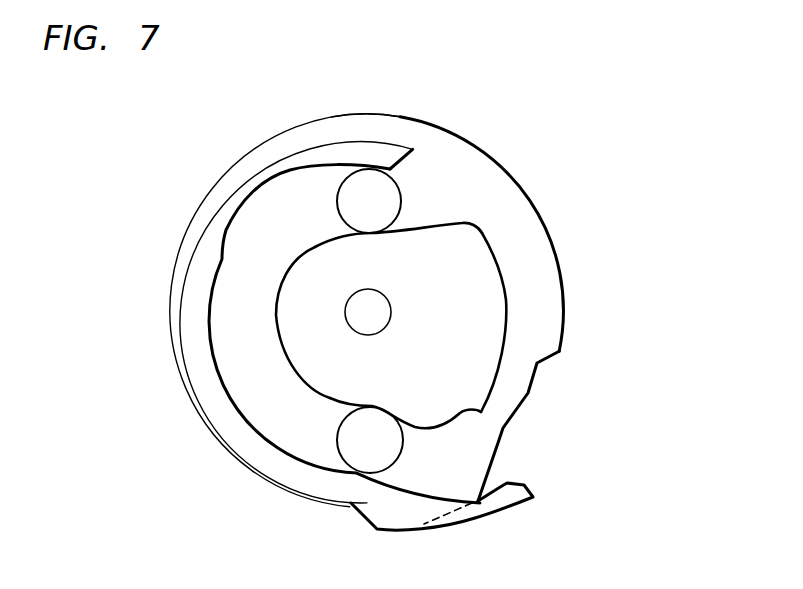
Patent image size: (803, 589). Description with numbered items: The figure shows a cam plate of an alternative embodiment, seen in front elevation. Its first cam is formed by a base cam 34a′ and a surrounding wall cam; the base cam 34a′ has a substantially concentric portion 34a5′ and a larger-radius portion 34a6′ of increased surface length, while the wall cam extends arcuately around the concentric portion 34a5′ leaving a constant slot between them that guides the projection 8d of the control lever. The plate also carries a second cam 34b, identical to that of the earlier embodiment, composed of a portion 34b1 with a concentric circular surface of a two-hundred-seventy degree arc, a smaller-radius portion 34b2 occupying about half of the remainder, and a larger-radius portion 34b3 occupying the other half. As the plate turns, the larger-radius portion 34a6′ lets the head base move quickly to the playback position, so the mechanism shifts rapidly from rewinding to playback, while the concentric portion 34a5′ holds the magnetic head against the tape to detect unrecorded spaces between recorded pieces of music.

The second cam 34b is at (515, 218).
The concentric circular portion 34b1 is at (362, 112).
The smaller-radius portion 34b2 is at (532, 390).
The larger-radius portion 34b3 is at (400, 530).
The base cam 34a′ is at (385, 277).
The concentric portion 34a5′ is at (277, 335).
The larger-radius portion 34a6′ is at (506, 295).
The projection 8d is at (375, 190).